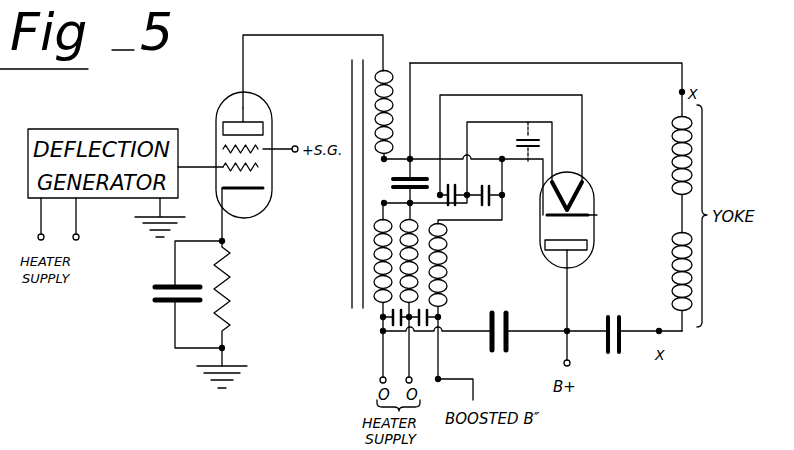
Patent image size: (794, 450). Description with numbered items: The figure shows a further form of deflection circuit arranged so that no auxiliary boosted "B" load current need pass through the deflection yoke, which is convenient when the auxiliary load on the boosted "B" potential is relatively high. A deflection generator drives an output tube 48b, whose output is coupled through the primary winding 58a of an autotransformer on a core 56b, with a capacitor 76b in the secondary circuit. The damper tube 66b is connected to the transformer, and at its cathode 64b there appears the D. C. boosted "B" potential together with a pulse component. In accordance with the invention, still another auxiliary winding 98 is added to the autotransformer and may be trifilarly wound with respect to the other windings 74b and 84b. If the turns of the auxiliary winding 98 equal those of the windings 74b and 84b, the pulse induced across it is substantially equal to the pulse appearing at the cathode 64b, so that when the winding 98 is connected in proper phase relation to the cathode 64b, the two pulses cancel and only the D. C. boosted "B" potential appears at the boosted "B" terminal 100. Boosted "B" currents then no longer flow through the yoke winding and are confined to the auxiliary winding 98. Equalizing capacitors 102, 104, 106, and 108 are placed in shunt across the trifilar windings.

The deflection output amplifier tube 48b is at (258, 109).
The output transformer core 56b is at (355, 63).
The transformer primary winding 58a is at (386, 69).
The capacitor 76b is at (418, 178).
The equalizing capacitor 102 is at (458, 192).
The equalizing capacitor 104 is at (491, 190).
The cathode 64b is at (597, 215).
The damper tube 66b is at (595, 239).
The winding 74b is at (390, 293).
The winding 84b is at (414, 251).
The auxiliary winding 98 is at (444, 281).
The equalizing capacitor 106 is at (381, 333).
The equalizing capacitor 108 is at (436, 311).
The boosted B terminal 100 is at (441, 378).